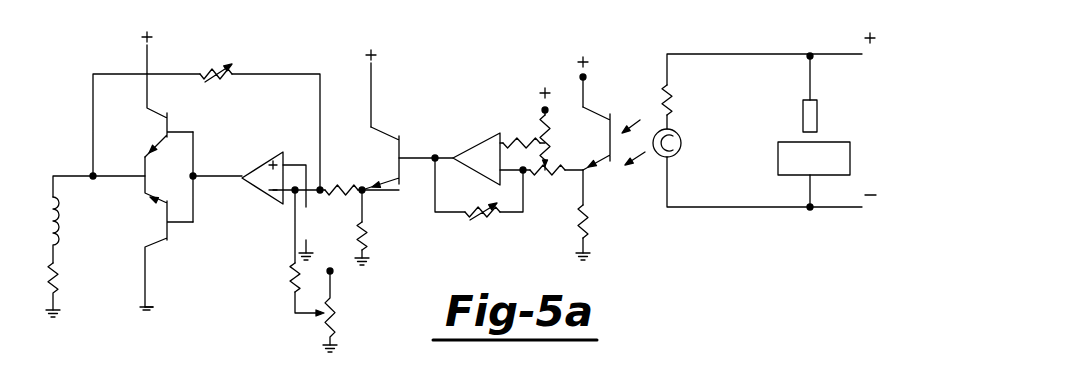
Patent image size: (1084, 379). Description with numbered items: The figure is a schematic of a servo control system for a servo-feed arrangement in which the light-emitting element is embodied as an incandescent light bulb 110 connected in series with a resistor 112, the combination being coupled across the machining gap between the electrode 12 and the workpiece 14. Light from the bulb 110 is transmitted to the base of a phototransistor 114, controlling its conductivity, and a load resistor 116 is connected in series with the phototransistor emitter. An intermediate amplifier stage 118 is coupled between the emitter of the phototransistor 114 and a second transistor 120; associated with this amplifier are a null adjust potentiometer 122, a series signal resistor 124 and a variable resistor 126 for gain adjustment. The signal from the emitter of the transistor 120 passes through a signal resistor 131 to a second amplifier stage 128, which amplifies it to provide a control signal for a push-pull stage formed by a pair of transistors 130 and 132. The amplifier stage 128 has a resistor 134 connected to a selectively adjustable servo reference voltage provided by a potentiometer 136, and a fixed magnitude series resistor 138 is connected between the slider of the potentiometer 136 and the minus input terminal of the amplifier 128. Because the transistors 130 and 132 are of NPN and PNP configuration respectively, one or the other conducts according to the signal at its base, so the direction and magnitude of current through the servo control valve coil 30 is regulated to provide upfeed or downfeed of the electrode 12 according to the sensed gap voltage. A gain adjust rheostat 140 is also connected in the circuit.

The electrode 12 is at (818, 114).
The workpiece 14 is at (851, 158).
The servo control valve coil 30 is at (62, 238).
The incandescent light bulb 110 is at (683, 144).
The resistor 112 is at (672, 96).
The phototransistor 114 is at (613, 117).
The load resistor 116 is at (590, 218).
The intermediate amplifier stage 118 is at (482, 140).
The second transistor 120 is at (400, 136).
The null adjust potentiometer 122 is at (549, 138).
The series signal resistor 124 is at (552, 180).
The variable resistor 126 is at (470, 228).
The second amplifier stage 128 is at (262, 160).
The transistor 130 is at (165, 129).
The signal resistor 131 is at (372, 150).
The transistor 132 is at (150, 212).
The resistor 134 is at (356, 230).
The potentiometer 136 is at (334, 313).
The fixed magnitude series resistor 138 is at (288, 268).
The gain adjust rheostat 140 is at (212, 65).